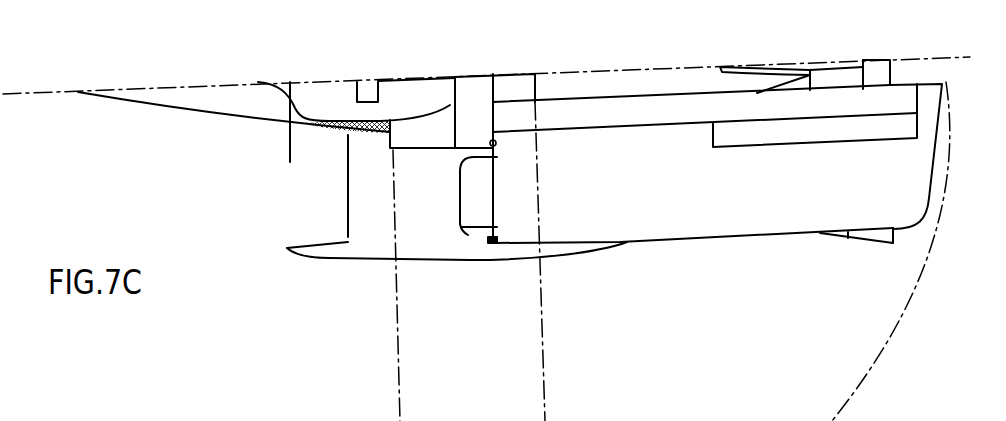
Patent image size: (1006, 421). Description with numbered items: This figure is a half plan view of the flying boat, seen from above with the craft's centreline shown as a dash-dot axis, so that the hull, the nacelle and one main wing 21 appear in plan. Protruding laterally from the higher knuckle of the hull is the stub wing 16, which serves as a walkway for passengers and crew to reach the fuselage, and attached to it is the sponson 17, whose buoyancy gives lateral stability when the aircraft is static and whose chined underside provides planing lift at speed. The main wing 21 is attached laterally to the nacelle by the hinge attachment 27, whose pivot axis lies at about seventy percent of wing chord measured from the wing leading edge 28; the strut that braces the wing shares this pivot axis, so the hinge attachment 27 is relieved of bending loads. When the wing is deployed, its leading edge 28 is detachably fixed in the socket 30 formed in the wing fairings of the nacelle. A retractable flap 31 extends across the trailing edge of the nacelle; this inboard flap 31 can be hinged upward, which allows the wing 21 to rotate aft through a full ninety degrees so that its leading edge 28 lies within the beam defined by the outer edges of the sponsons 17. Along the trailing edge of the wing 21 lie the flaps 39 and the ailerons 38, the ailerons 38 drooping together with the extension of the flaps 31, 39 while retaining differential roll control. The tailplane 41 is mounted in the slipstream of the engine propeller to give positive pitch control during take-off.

The stub wing 16 is at (370, 210).
The sponson 17 is at (425, 275).
The main wing 21 is at (732, 188).
The hinge attachment 27 is at (495, 139).
The wing leading edge 28 is at (697, 238).
The socket 30 is at (392, 148).
The retractable flap 31 is at (472, 110).
The aileron 38 is at (780, 132).
The flap 39 is at (686, 110).
The tailplane 41 is at (843, 235).